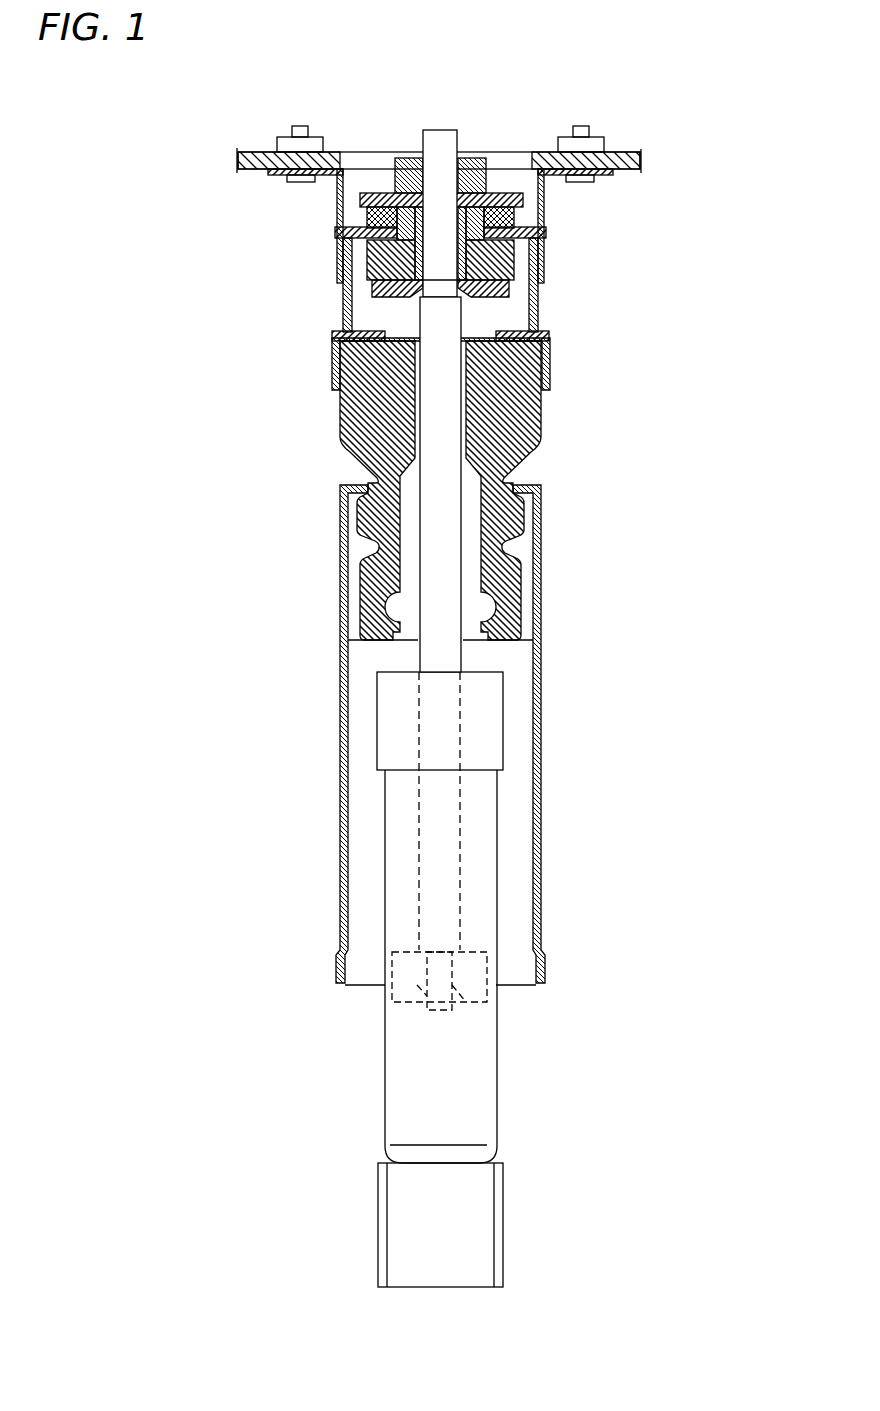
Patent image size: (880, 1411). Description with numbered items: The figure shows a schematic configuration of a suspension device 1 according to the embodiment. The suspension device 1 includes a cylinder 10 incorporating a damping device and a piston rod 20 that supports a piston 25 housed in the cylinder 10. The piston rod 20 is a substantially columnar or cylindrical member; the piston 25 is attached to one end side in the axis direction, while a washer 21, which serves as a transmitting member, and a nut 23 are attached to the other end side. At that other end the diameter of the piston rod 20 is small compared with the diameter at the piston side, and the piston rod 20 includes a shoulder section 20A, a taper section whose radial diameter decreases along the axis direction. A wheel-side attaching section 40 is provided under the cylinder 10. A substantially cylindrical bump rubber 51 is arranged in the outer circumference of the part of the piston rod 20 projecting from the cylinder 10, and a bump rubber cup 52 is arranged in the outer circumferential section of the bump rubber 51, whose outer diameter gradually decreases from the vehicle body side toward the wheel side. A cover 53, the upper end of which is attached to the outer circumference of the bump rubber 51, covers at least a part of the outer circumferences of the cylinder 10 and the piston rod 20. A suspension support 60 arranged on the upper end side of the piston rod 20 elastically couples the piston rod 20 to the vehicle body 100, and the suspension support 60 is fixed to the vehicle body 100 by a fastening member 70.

The suspension device 1 is at (250, 108).
The vehicle body 100 is at (623, 150).
The fastening member 70 is at (297, 183).
The suspension support 60 is at (568, 259).
The nut 23 is at (470, 157).
The washer 21 is at (522, 200).
The shoulder section 20A is at (510, 294).
The bump rubber cup 52 is at (552, 372).
The bump rubber 51 is at (542, 437).
The cover 53 is at (538, 715).
The piston rod 20 is at (472, 607).
The cylinder 10 is at (497, 852).
The piston 25 is at (487, 992).
The wheel-side attaching section 40 is at (503, 1215).